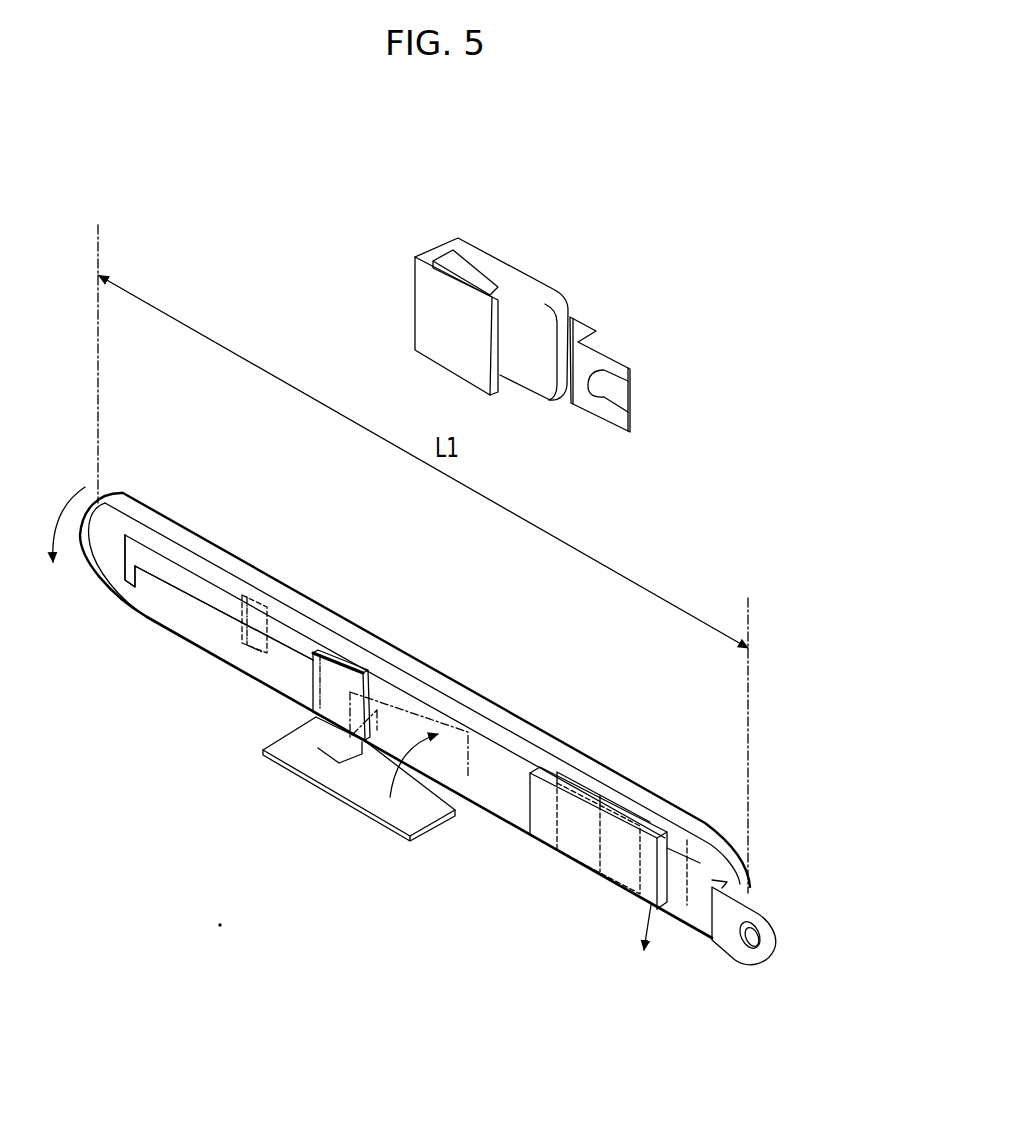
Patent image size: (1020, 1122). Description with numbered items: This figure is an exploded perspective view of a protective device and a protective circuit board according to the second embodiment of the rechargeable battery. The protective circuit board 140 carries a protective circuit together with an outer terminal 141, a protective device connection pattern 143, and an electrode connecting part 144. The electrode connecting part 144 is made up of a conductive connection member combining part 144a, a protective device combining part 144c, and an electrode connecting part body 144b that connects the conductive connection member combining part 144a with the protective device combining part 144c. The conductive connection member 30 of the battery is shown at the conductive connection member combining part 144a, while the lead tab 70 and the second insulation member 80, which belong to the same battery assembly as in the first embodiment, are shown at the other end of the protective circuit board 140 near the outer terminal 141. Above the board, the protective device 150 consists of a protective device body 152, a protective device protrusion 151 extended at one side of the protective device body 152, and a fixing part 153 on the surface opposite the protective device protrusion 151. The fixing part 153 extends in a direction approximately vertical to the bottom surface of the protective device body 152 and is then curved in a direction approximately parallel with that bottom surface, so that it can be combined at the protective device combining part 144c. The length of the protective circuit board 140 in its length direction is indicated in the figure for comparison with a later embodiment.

The conductive connection member 30 is at (363, 795).
The lead tab 70 is at (728, 943).
The second insulation member 80 is at (548, 836).
The protective circuit board 140 is at (553, 697).
The outer terminal 141 is at (658, 823).
The protective device connection pattern 143 is at (237, 647).
The electrode connecting part 144 is at (373, 546).
The conductive connection member combining part 144a is at (337, 653).
The electrode connecting part body 144b is at (212, 597).
The protective device combining part 144c is at (138, 543).
The protective device 150 is at (523, 316).
The protective device protrusion 151 is at (607, 360).
The protective device body 152 is at (483, 253).
The fixing part 153 is at (443, 357).